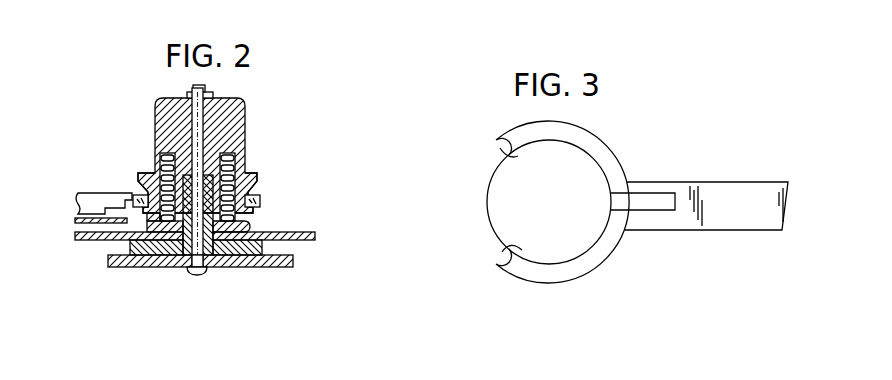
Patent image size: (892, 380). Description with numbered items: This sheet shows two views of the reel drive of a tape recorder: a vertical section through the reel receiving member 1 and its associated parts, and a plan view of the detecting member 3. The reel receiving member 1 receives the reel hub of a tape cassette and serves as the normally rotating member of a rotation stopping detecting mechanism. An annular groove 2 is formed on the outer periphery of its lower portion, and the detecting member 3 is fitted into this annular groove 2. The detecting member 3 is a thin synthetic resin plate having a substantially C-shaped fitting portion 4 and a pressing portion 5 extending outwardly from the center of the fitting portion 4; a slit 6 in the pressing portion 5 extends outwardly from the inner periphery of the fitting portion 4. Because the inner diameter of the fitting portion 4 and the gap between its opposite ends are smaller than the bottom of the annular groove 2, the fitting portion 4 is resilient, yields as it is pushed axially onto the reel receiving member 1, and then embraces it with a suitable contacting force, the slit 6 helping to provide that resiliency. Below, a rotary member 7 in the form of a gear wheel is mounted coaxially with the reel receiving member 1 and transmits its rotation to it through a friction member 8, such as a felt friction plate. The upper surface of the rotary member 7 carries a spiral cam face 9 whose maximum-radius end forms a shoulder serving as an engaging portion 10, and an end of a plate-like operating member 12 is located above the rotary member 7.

In FIG. 2, the reel receiving member 1 is at (246, 121).
In FIG. 3, the reel receiving member 1 is at (493, 172).
In FIG. 2, the annular groove 2 is at (259, 211).
In FIG. 2, the detecting member 3 is at (258, 196).
In FIG. 3, the detecting member 3 is at (594, 278).
In FIG. 3, the fitting portion 4 is at (497, 236).
In FIG. 3, the pressing portion 5 is at (722, 193).
In FIG. 3, the slit 6 is at (656, 200).
In FIG. 2, the rotary member 7 is at (308, 232).
In FIG. 2, the friction member 8 is at (262, 243).
In FIG. 2, the cam face 9 is at (247, 233).
In FIG. 2, the engaging portion 10 is at (143, 225).
In FIG. 2, the operating member 12 is at (97, 222).